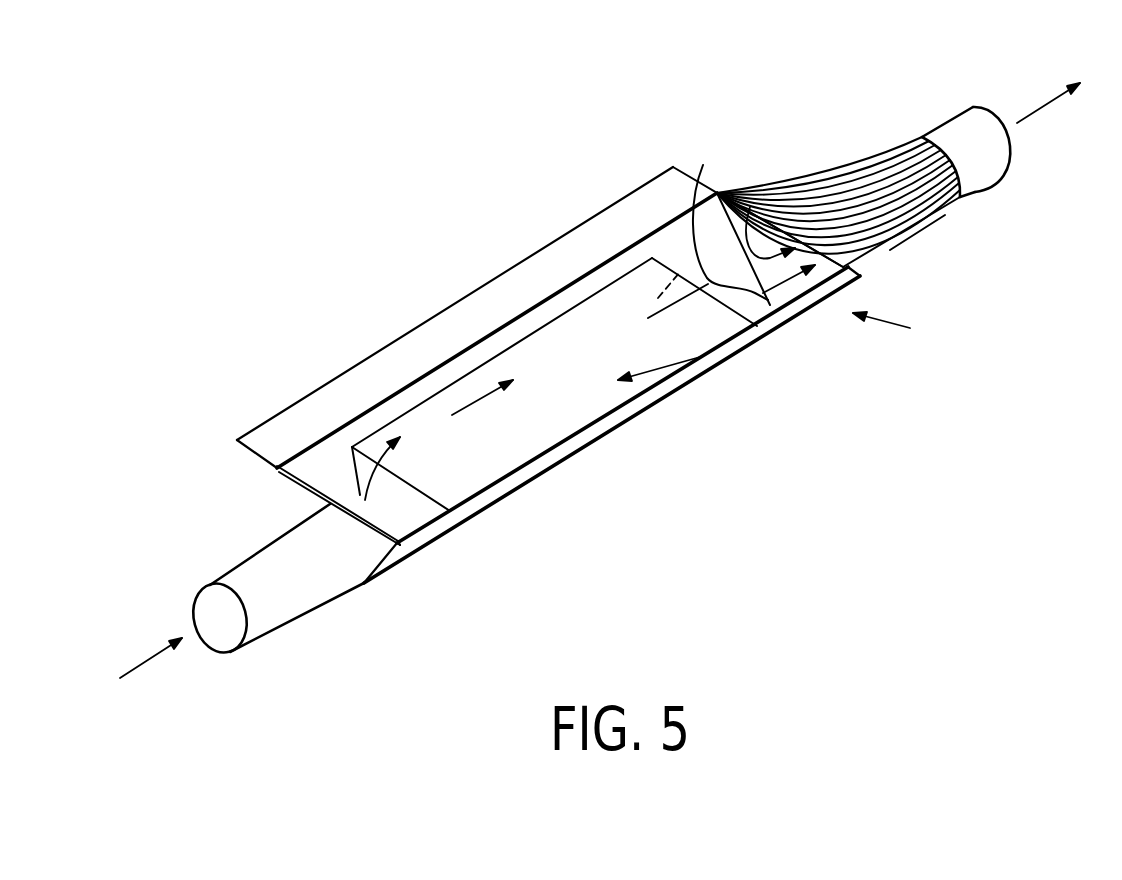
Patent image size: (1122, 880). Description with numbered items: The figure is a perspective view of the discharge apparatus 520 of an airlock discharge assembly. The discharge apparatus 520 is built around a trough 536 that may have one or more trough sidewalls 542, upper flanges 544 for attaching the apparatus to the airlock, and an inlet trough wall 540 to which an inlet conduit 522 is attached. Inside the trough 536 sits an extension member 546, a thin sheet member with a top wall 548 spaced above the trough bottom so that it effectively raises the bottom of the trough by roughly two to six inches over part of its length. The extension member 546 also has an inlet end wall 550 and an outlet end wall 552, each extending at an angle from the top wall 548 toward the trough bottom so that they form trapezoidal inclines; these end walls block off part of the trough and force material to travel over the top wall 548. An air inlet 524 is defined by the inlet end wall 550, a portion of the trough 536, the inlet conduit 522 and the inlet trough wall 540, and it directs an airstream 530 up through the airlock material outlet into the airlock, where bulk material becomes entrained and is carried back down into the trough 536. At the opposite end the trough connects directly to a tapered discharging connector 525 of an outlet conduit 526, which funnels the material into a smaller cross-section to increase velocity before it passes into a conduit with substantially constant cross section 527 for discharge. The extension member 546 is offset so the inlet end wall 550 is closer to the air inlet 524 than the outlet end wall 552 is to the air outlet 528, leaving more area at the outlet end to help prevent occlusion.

The discharge apparatus 520 is at (900, 330).
The inlet conduit 522 is at (262, 622).
The air inlet 524 is at (333, 460).
The tapered discharging connector 525 is at (890, 250).
The outlet conduit 526 is at (965, 228).
The conduit with substantially constant cross section 527 is at (980, 190).
The air outlet 528 is at (750, 207).
The airstream 530 is at (140, 655).
The trough 536 is at (403, 567).
The inlet trough wall 540 is at (378, 547).
The trough sidewall 542 is at (502, 345).
The upper flanges 544 is at (530, 258).
The extension member 546 is at (700, 357).
The top wall 548 is at (547, 428).
The inlet end wall 550 is at (303, 496).
The outlet end wall 552 is at (709, 219).